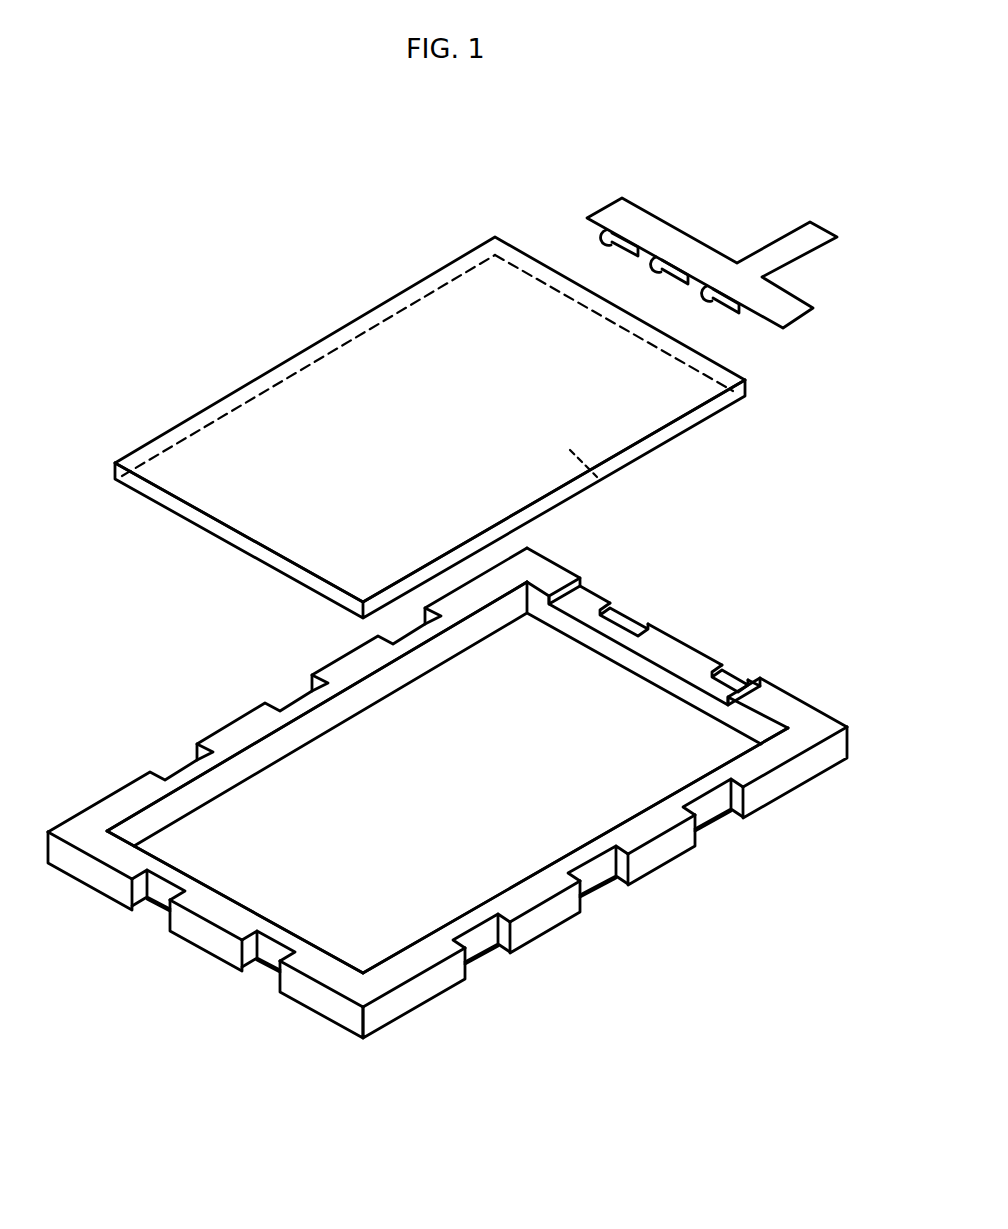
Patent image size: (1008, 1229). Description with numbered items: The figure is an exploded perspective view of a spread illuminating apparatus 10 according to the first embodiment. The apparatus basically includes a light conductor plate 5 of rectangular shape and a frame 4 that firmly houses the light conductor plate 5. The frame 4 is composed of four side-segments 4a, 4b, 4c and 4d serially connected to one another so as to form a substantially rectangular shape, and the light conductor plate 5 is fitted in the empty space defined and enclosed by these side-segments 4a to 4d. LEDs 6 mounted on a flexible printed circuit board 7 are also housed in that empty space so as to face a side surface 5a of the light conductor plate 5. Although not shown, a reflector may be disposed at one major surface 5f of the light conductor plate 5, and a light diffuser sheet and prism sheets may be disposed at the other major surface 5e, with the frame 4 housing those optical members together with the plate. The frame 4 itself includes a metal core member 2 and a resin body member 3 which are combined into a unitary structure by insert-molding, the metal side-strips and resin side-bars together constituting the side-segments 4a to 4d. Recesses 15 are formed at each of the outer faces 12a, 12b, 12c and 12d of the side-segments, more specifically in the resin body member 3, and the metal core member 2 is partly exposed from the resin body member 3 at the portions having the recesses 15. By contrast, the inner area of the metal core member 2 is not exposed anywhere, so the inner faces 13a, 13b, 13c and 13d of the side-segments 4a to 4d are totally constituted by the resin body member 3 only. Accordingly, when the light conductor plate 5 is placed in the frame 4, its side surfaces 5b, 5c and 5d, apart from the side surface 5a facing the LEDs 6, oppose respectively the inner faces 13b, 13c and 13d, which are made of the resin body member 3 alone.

The spread illuminating apparatus 10 is at (315, 236).
The light conductor plate 5 is at (474, 420).
The side surface 5a is at (736, 364).
The side surface 5b is at (340, 348).
The side surface 5c is at (690, 425).
The side surface 5d is at (213, 520).
The major surface 5e is at (427, 350).
The major surface 5f is at (598, 480).
The LEDs 6 is at (628, 207).
The flexible printed circuit (FPC) board 7 is at (715, 233).
The resin body member 3 is at (451, 821).
The metal core member 2 is at (491, 795).
The frame 4 is at (812, 775).
The side-segment 4a is at (705, 660).
The side-segment 4b is at (233, 728).
The side-segment 4c is at (548, 890).
The side-segment 4d is at (220, 910).
The outer face 12a is at (812, 702).
The outer face 12b is at (83, 806).
The outer face 12c is at (430, 985).
The outer face 12d is at (310, 1000).
The inner face 13a is at (648, 690).
The inner face 13b is at (165, 812).
The inner face 13c is at (376, 958).
The inner face 13d is at (350, 948).
The recesses 15 is at (417, 626).